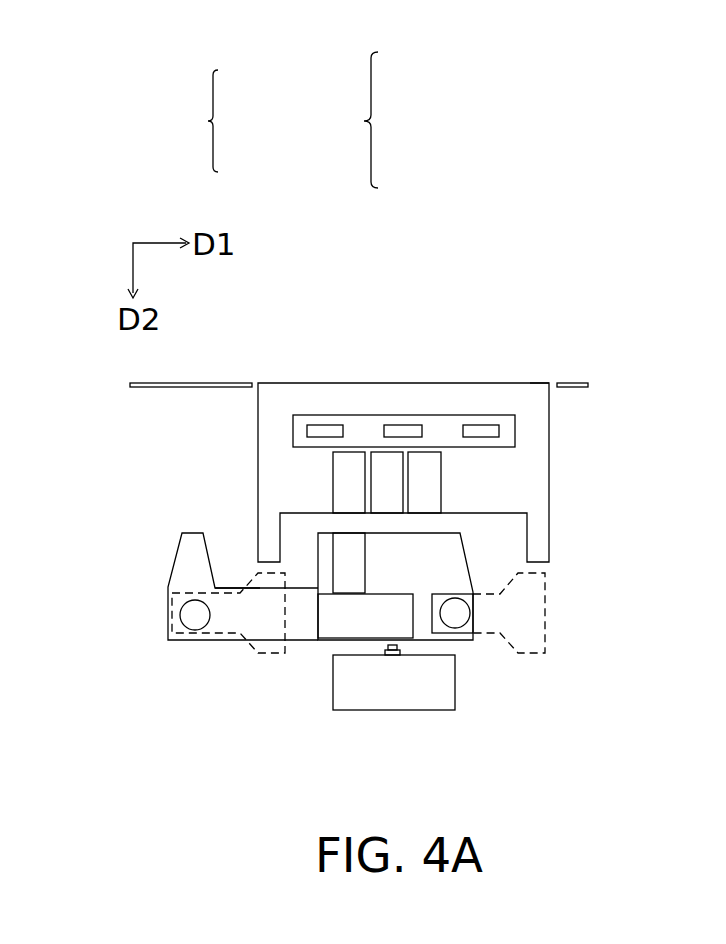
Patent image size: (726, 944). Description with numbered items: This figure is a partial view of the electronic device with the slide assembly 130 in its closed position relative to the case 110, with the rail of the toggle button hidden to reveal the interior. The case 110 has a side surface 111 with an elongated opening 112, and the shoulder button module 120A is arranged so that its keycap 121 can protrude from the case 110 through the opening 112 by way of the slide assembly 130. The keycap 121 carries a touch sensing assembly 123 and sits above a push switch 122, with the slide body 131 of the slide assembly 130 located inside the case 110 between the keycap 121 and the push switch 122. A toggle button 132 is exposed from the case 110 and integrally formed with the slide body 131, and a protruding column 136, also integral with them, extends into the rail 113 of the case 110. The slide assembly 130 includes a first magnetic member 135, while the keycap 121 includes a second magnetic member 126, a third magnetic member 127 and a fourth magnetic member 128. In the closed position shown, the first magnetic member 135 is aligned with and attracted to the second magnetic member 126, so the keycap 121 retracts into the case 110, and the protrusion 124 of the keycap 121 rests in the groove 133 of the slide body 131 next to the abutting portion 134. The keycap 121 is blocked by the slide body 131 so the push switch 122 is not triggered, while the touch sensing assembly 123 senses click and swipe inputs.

The case 110 is at (211, 121).
The side surface 111 is at (577, 383).
The opening 112 is at (551, 383).
The rail 113 is at (212, 632).
The shoulder button module 120A is at (361, 120).
The keycap 121 is at (283, 397).
The push switch 122 is at (347, 697).
The touch sensing assembly 123 is at (480, 427).
The protrusion 124 is at (270, 548).
The second magnetic member 126 is at (333, 483).
The third magnetic member 127 is at (392, 512).
The fourth magnetic member 128 is at (437, 483).
The slide assembly 130 is at (402, 171).
The slide body 131 is at (447, 560).
The toggle button 132 is at (327, 627).
The groove 133 is at (225, 557).
The abutting portion 134 is at (188, 558).
The first magnetic member 135 is at (333, 563).
The protruding column 136 is at (195, 615).